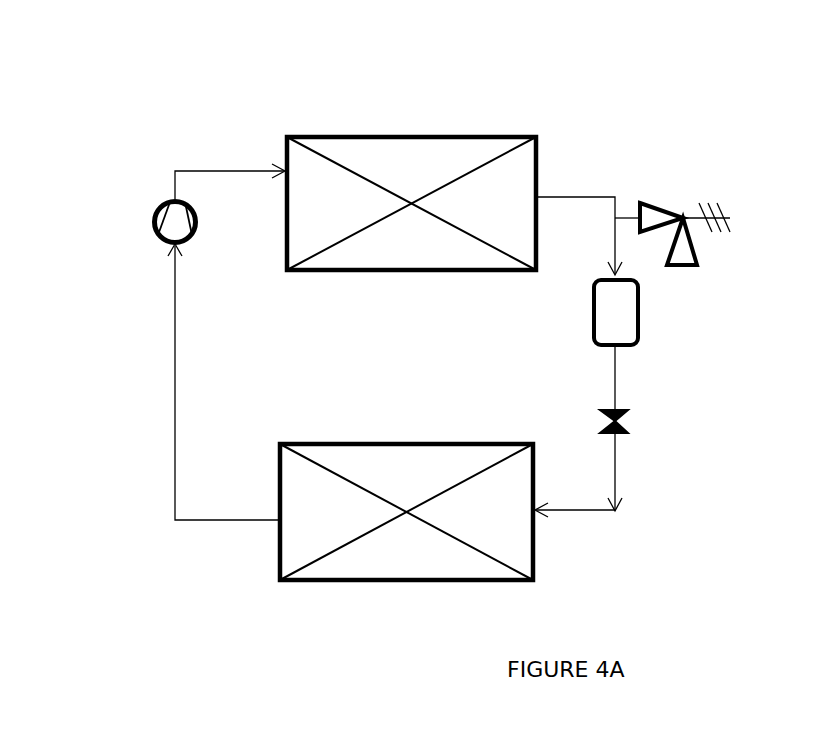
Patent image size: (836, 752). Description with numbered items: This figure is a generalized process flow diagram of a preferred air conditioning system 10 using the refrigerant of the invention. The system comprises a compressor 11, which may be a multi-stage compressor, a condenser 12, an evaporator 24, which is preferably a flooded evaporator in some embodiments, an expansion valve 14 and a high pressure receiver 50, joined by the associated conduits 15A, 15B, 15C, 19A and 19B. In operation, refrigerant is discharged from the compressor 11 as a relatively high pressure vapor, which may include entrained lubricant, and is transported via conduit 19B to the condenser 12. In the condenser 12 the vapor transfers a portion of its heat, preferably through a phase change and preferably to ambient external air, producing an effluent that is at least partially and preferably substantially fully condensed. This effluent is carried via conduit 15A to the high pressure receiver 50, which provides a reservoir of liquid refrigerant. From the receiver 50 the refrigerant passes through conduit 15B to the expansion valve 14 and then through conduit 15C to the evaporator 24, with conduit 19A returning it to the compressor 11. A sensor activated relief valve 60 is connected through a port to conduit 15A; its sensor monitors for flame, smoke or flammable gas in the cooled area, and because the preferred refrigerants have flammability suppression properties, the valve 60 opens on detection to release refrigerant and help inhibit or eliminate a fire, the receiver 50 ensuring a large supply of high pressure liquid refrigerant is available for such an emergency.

The air conditioning system 10 is at (619, 84).
The compressor 11 is at (152, 213).
The condenser 12 is at (407, 135).
The expansion valve 14 is at (628, 423).
The conduit 15A is at (570, 196).
The conduit 15B is at (613, 373).
The conduit 15C is at (580, 512).
The conduit 19A is at (170, 368).
The conduit 19B is at (207, 171).
The evaporator 24 is at (305, 582).
The high pressure receiver 50 is at (640, 327).
The sensor activated relief valve 60 is at (690, 243).